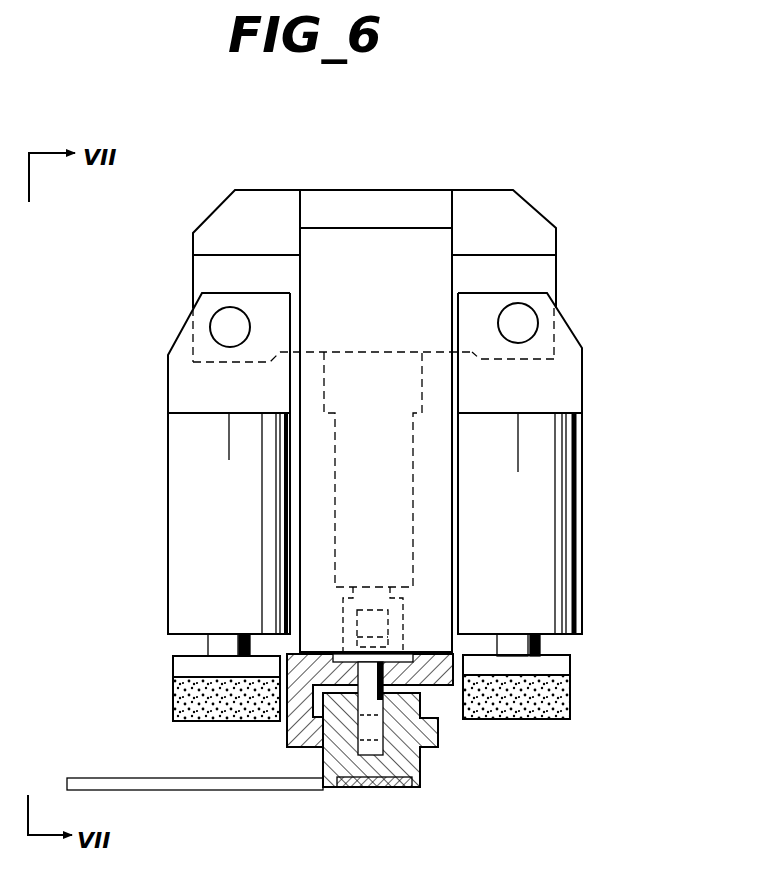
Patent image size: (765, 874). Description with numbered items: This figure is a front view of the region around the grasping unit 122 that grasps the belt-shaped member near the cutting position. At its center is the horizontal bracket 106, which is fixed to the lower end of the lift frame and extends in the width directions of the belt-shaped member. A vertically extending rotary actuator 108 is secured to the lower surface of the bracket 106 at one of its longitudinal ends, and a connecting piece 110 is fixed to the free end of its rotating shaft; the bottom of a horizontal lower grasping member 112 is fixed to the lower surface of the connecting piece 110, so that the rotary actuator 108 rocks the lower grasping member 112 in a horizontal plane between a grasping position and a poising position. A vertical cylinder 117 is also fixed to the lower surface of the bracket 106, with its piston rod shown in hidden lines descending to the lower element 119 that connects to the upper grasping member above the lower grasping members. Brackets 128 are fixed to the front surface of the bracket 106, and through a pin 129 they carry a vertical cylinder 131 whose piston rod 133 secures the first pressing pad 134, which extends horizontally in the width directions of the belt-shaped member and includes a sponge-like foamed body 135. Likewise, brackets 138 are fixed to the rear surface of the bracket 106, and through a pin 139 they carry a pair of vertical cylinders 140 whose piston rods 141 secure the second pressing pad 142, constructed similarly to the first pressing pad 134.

The horizontal bracket 106 is at (372, 200).
The rotary actuator 108 is at (433, 460).
The connecting piece 110 is at (421, 760).
The lower grasping member 112 is at (190, 792).
The vertical cylinder 117 is at (413, 503).
The plunger foot 119 is at (372, 587).
The grasping unit 122 is at (469, 726).
The brackets 128 is at (216, 214).
The pin 129 is at (218, 320).
The vertical cylinder 131 is at (180, 522).
The piston rod 133 is at (228, 638).
The first pressing pad 134 is at (170, 658).
The foamed body 135 is at (172, 706).
The brackets 138 is at (530, 214).
The pin 139 is at (525, 322).
The vertical cylinders 140 is at (580, 515).
The piston rods 141 is at (512, 638).
The second pressing pad 142 is at (578, 662).